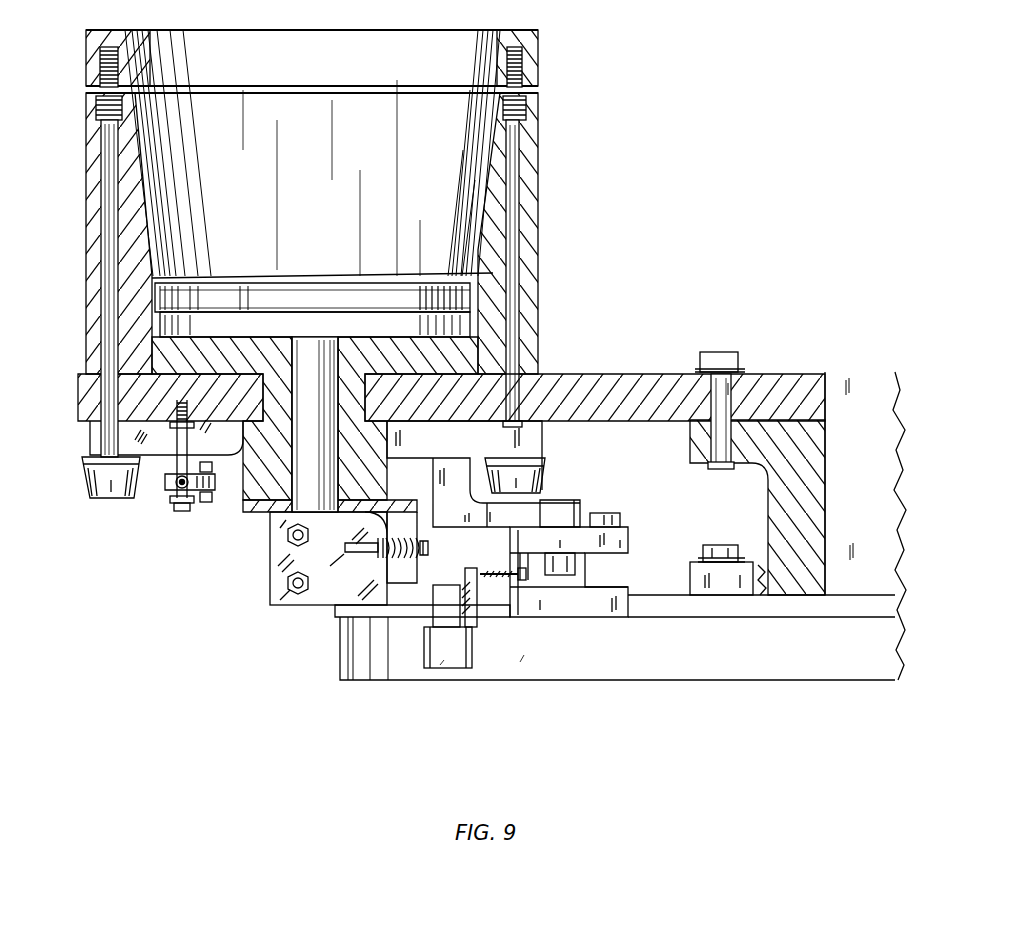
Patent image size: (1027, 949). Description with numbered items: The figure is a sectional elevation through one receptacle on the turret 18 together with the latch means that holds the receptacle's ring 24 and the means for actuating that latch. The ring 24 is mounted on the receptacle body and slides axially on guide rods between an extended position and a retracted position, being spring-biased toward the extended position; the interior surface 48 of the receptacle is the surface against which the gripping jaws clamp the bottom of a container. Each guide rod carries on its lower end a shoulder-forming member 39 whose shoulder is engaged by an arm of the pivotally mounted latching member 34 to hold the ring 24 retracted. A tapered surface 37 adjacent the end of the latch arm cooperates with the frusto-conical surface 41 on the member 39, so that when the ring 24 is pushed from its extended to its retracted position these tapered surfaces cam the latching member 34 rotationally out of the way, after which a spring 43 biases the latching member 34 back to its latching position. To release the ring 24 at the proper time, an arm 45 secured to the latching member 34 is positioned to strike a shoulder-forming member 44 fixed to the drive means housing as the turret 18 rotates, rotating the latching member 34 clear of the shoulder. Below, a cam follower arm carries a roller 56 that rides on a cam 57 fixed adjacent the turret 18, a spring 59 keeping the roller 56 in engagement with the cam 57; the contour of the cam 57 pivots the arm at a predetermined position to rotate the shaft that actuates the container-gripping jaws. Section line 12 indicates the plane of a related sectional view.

The section line 12- 12 is at (52, 424).
The turret 18 is at (573, 372).
The ring 24 is at (538, 66).
The latching member 34 is at (540, 440).
The tapered surface 37 is at (90, 436).
The shoulder-forming member 39 is at (110, 498).
The frusto-conical surface 41 is at (82, 478).
The spring 43 is at (192, 504).
The shoulder-forming member 44 is at (578, 500).
The arm 45 is at (482, 528).
The interior surface 48 is at (486, 220).
The roller 56 is at (478, 640).
The cam 57 is at (665, 681).
The spring 59 is at (412, 560).